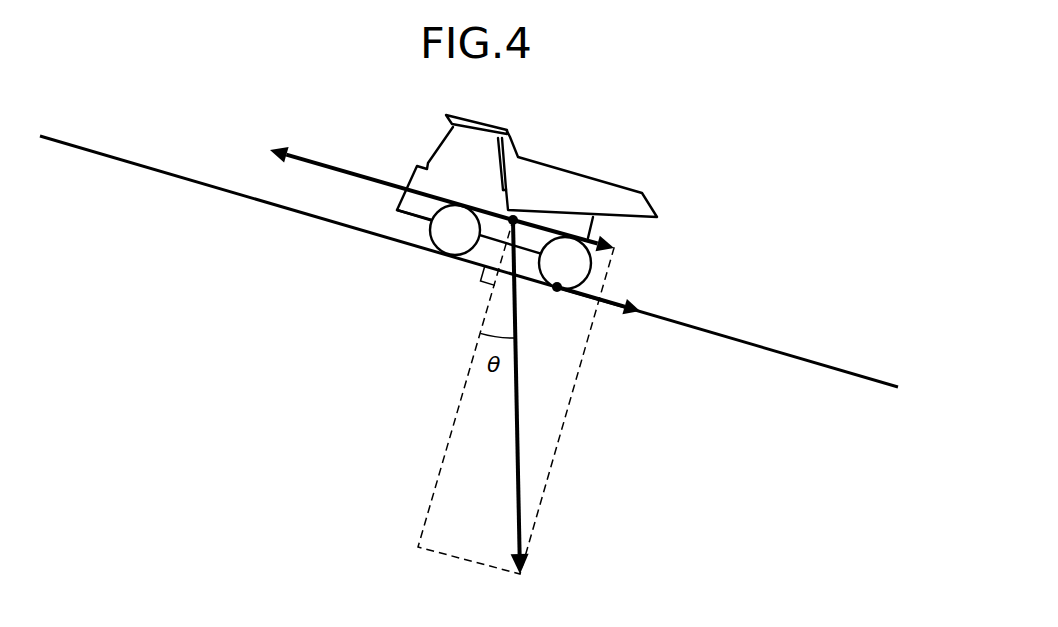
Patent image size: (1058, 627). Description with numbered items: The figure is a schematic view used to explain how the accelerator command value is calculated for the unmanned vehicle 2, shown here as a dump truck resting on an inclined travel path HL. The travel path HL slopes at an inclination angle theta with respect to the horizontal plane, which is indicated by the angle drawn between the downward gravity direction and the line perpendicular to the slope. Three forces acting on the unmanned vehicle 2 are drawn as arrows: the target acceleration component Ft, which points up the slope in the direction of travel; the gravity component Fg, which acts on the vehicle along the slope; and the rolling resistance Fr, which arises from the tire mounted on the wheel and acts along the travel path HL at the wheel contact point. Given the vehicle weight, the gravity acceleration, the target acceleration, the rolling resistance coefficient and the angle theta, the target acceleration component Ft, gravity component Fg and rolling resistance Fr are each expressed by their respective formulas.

The unmanned vehicle 2 is at (596, 161).
The travel path HL is at (810, 360).
The target acceleration component Ft is at (343, 171).
The gravity component Fg is at (598, 229).
The rolling resistance Fr is at (619, 302).